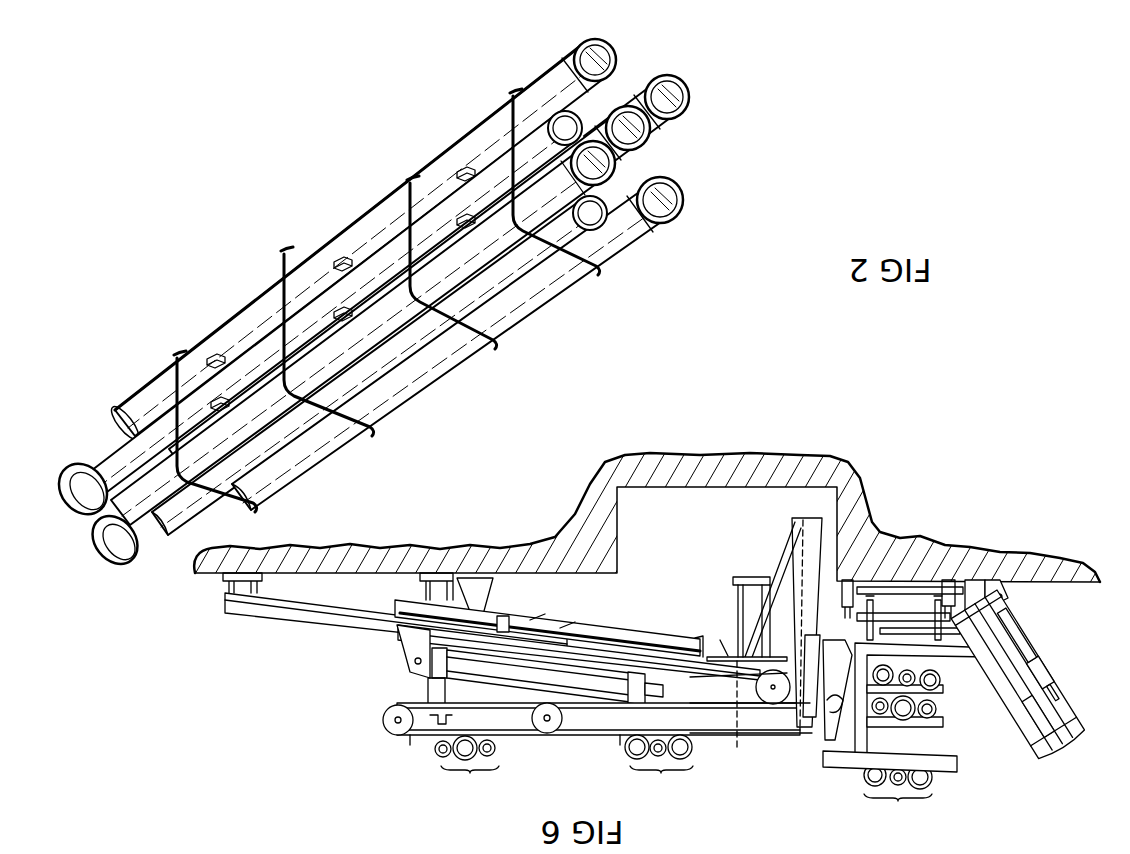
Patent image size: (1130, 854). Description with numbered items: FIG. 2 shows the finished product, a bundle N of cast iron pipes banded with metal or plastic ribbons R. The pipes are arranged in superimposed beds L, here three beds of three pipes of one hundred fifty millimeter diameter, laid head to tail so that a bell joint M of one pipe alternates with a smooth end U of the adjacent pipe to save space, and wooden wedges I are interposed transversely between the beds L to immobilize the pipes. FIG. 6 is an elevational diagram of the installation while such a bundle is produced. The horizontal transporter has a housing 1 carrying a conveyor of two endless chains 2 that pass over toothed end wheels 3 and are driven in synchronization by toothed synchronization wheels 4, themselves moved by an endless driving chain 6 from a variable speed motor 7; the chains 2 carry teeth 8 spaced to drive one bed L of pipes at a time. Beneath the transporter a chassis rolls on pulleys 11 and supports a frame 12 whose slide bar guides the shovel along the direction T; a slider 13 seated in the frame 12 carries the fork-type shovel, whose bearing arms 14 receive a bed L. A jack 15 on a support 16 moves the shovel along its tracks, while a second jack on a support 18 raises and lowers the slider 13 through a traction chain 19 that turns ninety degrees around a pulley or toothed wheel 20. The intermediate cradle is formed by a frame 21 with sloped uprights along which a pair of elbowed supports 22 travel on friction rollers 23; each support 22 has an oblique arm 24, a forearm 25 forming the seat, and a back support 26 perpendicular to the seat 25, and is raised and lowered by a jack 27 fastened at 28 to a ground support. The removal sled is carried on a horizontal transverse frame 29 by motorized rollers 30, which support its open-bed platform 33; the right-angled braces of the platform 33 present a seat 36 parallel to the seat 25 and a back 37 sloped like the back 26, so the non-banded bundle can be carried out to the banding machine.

In FIG. 2, the shovel guiding direction T is at (377, 220).
In FIG. 2, the wedge I is at (337, 260).
In FIG. 2, the ribbon R is at (508, 99).
In FIG. 2, the smooth end U is at (560, 80).
In FIG. 2, the bell joint M is at (76, 507).
In FIG. 2, the bundle of pipes N is at (448, 370).
In FIG. 2, the bed of pipes L is at (391, 300).
In FIG. 6, the housing 1 is at (729, 737).
In FIG. 6, the endless chain 2 is at (520, 737).
In FIG. 6, the toothed end wheel 3 is at (385, 728).
In FIG. 6, the toothed synchronization wheel 4 is at (571, 752).
In FIG. 6, the endless driving chain 6 is at (322, 622).
In FIG. 6, the variable speed motor 7 is at (683, 777).
In FIG. 6, the tooth 8 is at (636, 619).
In FIG. 6, the pulley 11 is at (508, 623).
In FIG. 6, the frame 12 is at (804, 520).
In FIG. 6, the slider 13 is at (756, 757).
In FIG. 6, the bearing arm 14 is at (946, 758).
In FIG. 6, the jack 15 is at (500, 616).
In FIG. 6, the support 16 is at (476, 582).
In FIG. 6, the support 18 is at (400, 650).
In FIG. 6, the traction chain 19 is at (680, 702).
In FIG. 6, the pulley 20 is at (750, 640).
In FIG. 6, the frame 21 is at (975, 580).
In FIG. 6, the elbowed support 22 is at (1015, 726).
In FIG. 6, the friction roller 23 is at (1050, 686).
In FIG. 6, the oblique arm 24 is at (1024, 750).
In FIG. 6, the forearm 25 is at (960, 668).
In FIG. 6, the back support 26 is at (876, 735).
In FIG. 6, the jack 27 is at (1032, 640).
In FIG. 6, the fastening point 28 is at (1002, 588).
In FIG. 6, the frame 29 is at (948, 580).
In FIG. 6, the motorized roller 30 is at (872, 655).
In FIG. 6, the support platform 33 is at (900, 658).
In FIG. 6, the seat 36 is at (902, 610).
In FIG. 6, the back 37 is at (837, 687).